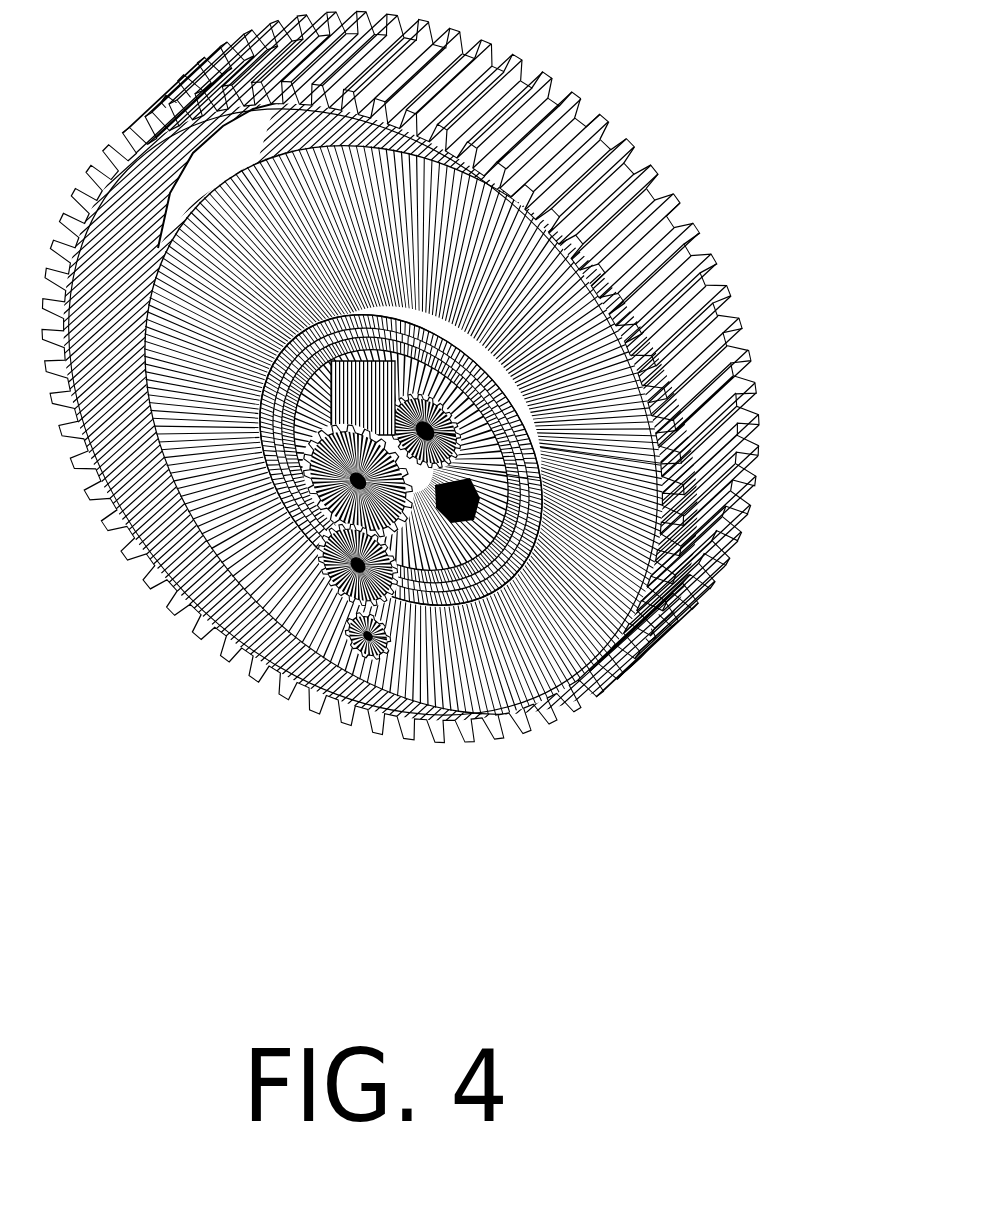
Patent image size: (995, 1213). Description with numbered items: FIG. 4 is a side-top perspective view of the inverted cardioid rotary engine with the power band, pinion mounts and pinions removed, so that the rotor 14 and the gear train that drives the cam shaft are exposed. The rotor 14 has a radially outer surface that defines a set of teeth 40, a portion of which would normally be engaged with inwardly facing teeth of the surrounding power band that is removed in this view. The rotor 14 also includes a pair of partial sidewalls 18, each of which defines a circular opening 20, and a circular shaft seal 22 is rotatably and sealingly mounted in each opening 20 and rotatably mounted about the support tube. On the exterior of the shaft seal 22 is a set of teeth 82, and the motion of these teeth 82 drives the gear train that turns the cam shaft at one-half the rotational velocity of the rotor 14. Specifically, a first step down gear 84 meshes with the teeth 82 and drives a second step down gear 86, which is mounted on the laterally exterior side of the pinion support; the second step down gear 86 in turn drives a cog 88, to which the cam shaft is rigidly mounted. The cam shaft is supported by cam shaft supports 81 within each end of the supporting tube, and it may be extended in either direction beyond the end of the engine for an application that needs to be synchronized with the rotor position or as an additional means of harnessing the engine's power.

The rotor 14 is at (617, 547).
The partial sidewalls 18 is at (523, 650).
The circular opening 20 is at (478, 348).
The shaft seal 22 is at (322, 273).
The teeth 40 is at (683, 460).
The cam shaft supports 81 is at (392, 402).
The teeth 82 is at (507, 547).
The first step down gear 84 is at (393, 645).
The second step down gear 86 is at (345, 557).
The cog 88 is at (316, 476).